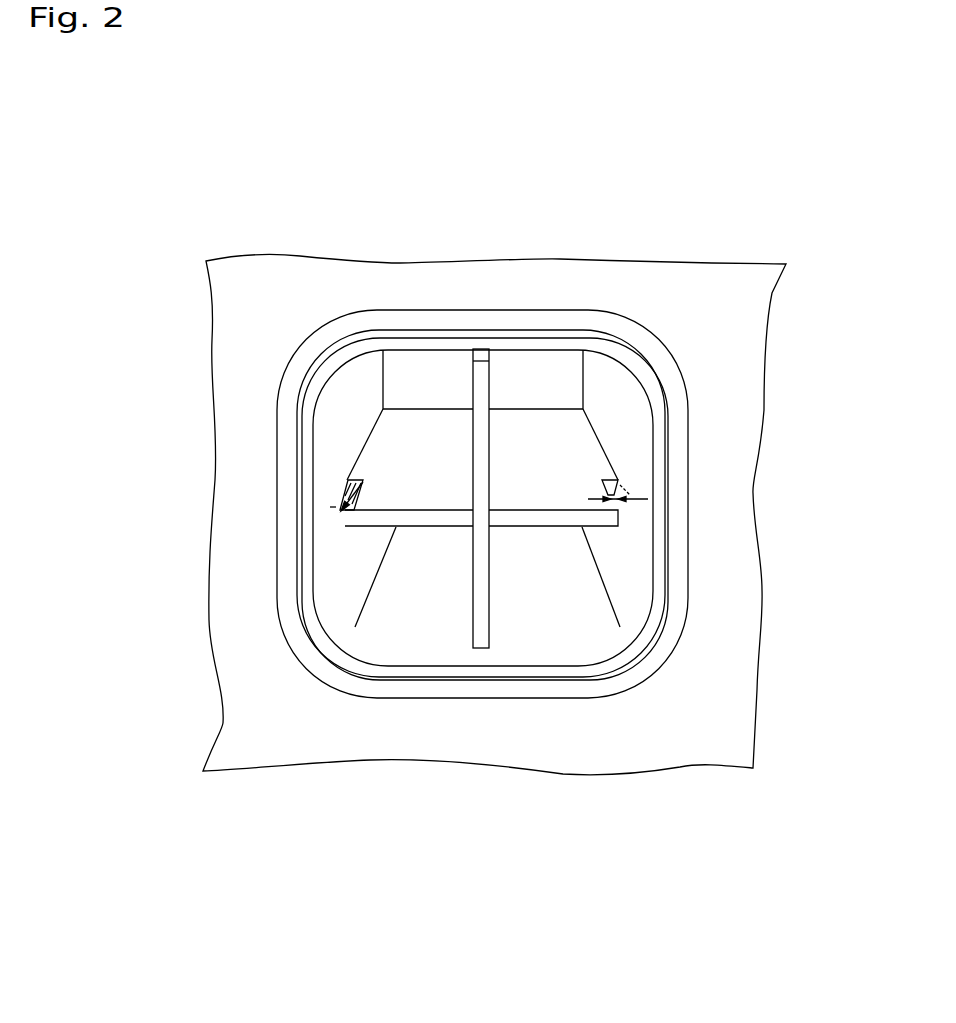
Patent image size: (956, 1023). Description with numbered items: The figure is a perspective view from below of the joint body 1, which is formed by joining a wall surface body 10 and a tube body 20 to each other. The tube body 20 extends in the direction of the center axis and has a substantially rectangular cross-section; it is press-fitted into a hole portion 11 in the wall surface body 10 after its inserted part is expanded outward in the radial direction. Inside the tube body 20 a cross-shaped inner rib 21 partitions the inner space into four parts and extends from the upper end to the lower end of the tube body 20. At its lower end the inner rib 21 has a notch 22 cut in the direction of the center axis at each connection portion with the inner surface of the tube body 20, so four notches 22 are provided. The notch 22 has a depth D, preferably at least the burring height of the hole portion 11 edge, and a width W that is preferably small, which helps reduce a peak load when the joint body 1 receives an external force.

The joint body 1 is at (180, 180).
The wall surface body 10 is at (220, 370).
The hole portion 11 is at (300, 453).
The tube body 20 is at (612, 345).
The inner rib 21 is at (421, 457).
The notch 22 is at (486, 344).